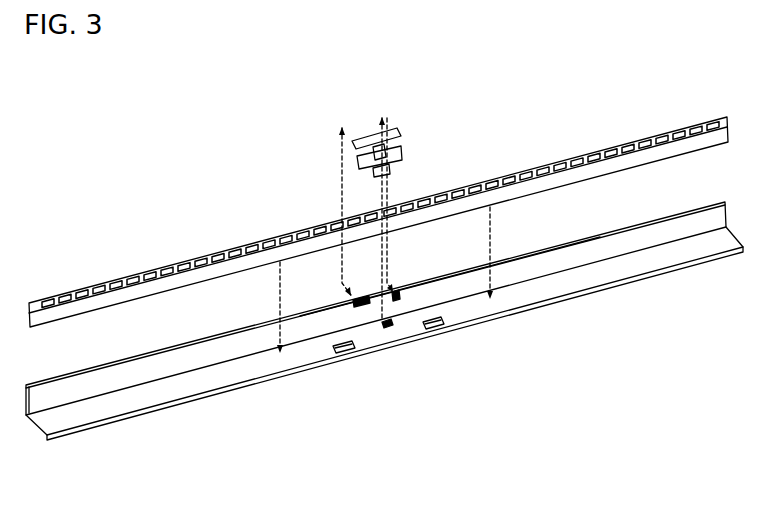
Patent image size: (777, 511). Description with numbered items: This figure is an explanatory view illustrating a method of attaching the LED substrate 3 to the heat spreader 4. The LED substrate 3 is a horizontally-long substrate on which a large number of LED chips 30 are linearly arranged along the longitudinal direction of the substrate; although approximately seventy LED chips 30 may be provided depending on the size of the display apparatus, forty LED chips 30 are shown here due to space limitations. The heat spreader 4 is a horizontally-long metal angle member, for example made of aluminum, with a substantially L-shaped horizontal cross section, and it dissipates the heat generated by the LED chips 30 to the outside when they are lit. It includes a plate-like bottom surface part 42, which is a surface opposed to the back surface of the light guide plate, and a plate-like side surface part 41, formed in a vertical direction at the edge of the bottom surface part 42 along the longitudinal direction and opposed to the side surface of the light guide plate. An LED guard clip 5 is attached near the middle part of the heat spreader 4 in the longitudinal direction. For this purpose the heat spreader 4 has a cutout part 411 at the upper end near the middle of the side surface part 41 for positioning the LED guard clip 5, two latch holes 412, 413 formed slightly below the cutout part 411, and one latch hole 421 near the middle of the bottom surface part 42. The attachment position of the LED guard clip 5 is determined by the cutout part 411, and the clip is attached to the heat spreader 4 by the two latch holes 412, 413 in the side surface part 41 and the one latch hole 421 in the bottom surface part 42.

The LED substrate 3 is at (665, 152).
The LED chip 30 is at (636, 78).
The LED guard clip 5 is at (432, 130).
The heat spreader 4 is at (685, 298).
The side surface part 41 is at (603, 247).
The bottom surface part 42 is at (113, 411).
The cutout part 411 is at (367, 301).
The latch hole 412 is at (360, 305).
The latch hole 413 is at (400, 300).
The latch hole 421 is at (395, 329).